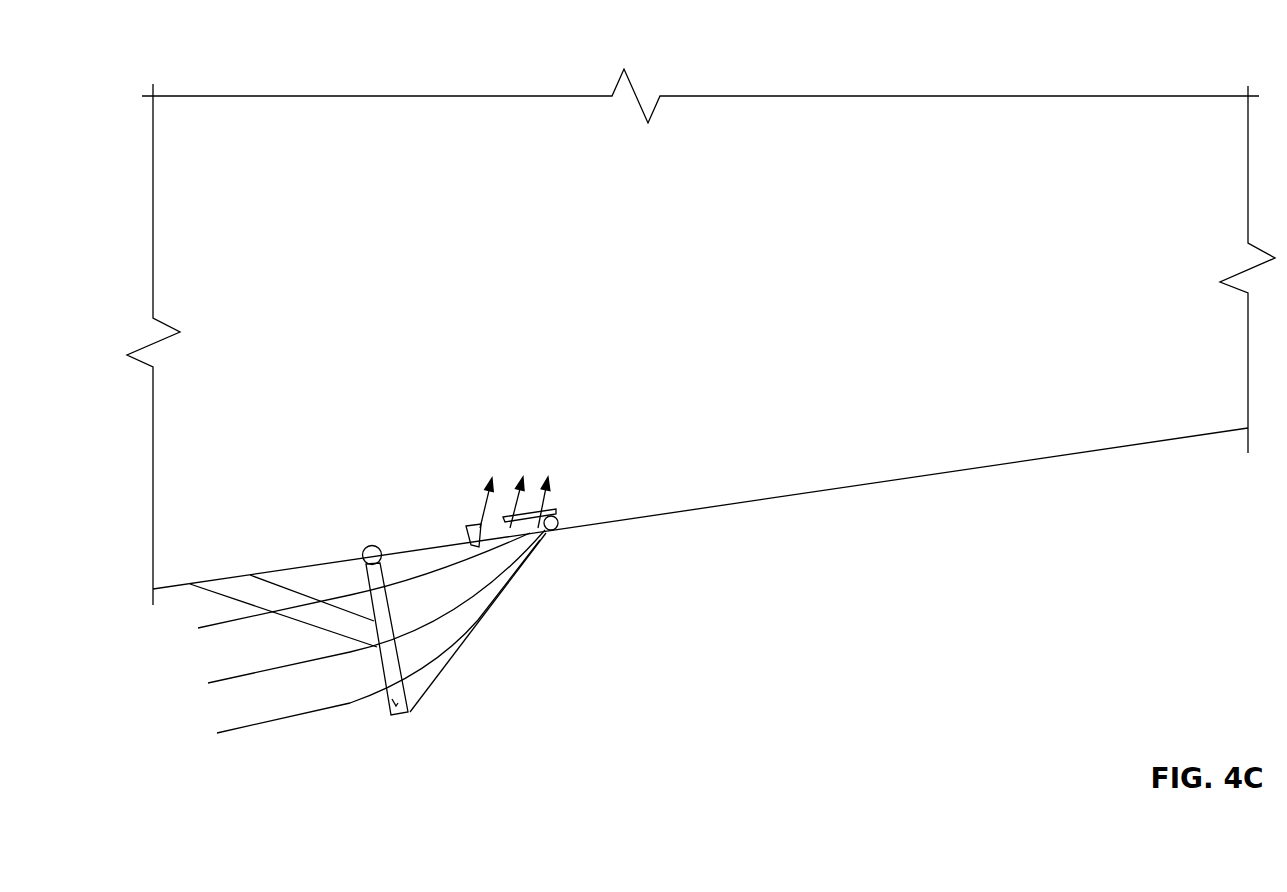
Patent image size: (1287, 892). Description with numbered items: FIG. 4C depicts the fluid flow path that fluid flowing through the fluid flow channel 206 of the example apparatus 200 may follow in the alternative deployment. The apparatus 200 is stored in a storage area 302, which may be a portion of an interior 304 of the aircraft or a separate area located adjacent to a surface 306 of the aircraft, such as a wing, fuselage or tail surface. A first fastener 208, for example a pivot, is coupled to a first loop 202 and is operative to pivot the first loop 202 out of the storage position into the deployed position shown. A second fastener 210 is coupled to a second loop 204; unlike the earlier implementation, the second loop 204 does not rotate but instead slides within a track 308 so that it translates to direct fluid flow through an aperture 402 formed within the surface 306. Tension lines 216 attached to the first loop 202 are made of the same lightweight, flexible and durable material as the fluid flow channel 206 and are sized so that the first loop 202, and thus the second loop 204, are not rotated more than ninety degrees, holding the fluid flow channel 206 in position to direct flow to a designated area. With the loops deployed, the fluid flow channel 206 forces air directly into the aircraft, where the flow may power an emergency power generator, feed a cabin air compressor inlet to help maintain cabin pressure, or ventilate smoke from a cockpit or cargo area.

The apparatus 200 is at (405, 621).
The first loop 202 is at (395, 700).
The second loop 204 is at (472, 527).
The fluid flow channel 206 is at (435, 673).
The first fastener 208 is at (373, 546).
The second fastener 210 is at (555, 510).
The tension lines 216 is at (242, 585).
The storage area 302 is at (588, 532).
The interior 304 is at (603, 342).
The surface 306 is at (723, 512).
The track 308 is at (555, 530).
The aperture 402 is at (535, 442).